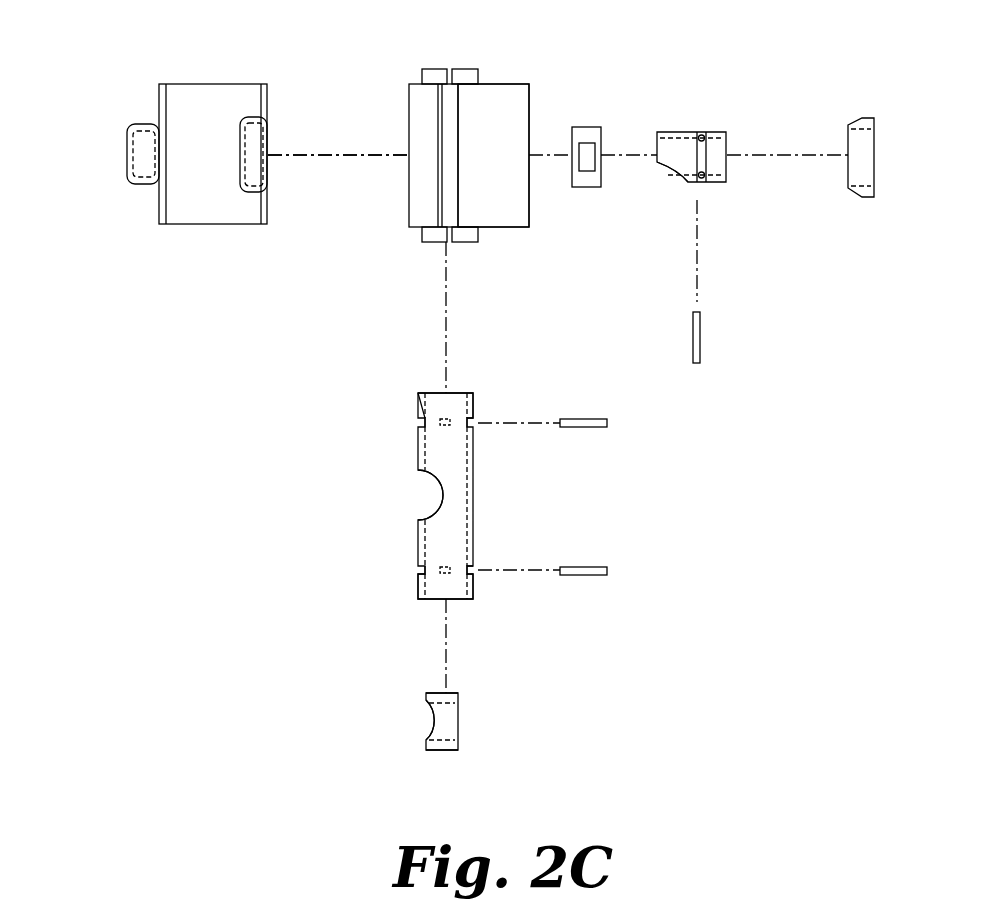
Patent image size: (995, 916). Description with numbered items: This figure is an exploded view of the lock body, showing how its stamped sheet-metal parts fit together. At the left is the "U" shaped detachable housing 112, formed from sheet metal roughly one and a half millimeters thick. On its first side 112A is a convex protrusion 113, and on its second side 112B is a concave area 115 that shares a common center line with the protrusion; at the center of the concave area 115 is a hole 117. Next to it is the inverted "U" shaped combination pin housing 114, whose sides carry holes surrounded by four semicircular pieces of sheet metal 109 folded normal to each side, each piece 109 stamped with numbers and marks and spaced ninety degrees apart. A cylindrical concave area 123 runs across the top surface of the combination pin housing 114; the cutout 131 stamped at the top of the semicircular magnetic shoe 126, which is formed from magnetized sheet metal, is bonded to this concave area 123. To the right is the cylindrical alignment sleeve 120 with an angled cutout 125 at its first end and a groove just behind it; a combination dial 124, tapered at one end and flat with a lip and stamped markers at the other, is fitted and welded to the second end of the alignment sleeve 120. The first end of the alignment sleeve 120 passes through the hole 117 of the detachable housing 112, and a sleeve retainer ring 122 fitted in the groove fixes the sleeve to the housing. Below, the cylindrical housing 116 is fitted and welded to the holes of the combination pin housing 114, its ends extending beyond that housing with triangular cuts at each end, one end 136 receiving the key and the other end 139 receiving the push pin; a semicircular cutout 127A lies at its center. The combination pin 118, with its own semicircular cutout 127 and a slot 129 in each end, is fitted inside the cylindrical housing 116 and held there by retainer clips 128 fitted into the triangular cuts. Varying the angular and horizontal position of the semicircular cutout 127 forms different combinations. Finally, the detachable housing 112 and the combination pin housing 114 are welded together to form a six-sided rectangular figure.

The "U" shaped detachable housing 112 is at (201, 84).
The first side 112A is at (159, 101).
The second side 112B is at (268, 100).
The convex protrusion 113 is at (128, 177).
The concave area 115 is at (262, 163).
The hole 117 is at (291, 140).
The "U" shaped combination pin housing 114 is at (416, 84).
The pieces of sheet metal 109 is at (462, 69).
The cylindrical concave area 123 is at (458, 120).
The semicircular magnetic shoe 126 is at (584, 127).
The cutout 131 is at (590, 143).
The alignment sleeve 120 is at (679, 132).
The angled cutout 125 is at (676, 171).
The combination dial 124 is at (868, 118).
The sleeve retainer ring 122 is at (693, 345).
The cylindrical housing 116 is at (418, 448).
The end 136 is at (459, 393).
The end 139 is at (459, 599).
The semicircular cutout 127A is at (443, 495).
The retainer clips 128 is at (583, 567).
The combination pin 118 is at (426, 745).
The semicircular cutout 127 is at (430, 719).
The slot 129 is at (450, 693).